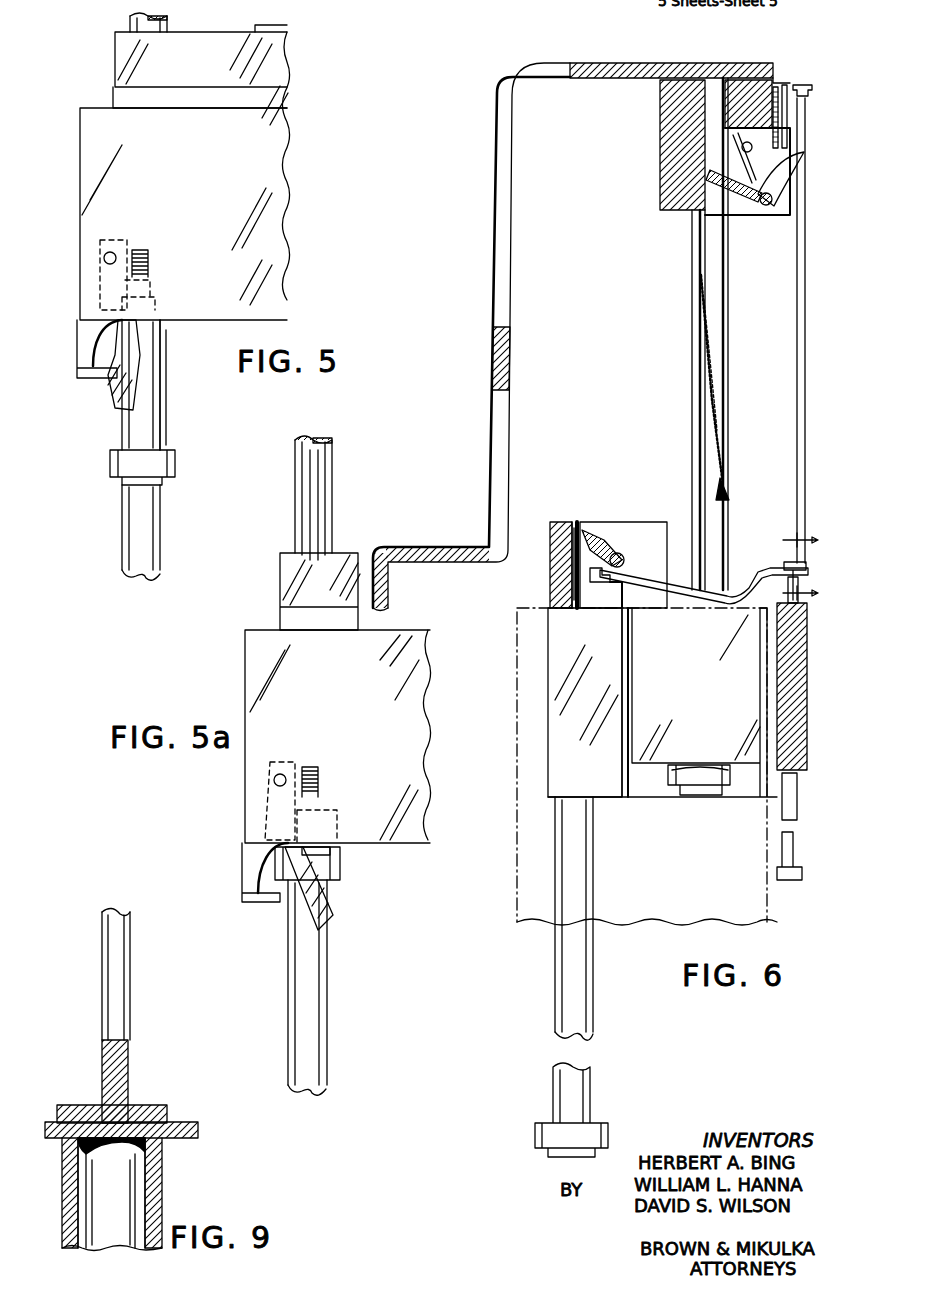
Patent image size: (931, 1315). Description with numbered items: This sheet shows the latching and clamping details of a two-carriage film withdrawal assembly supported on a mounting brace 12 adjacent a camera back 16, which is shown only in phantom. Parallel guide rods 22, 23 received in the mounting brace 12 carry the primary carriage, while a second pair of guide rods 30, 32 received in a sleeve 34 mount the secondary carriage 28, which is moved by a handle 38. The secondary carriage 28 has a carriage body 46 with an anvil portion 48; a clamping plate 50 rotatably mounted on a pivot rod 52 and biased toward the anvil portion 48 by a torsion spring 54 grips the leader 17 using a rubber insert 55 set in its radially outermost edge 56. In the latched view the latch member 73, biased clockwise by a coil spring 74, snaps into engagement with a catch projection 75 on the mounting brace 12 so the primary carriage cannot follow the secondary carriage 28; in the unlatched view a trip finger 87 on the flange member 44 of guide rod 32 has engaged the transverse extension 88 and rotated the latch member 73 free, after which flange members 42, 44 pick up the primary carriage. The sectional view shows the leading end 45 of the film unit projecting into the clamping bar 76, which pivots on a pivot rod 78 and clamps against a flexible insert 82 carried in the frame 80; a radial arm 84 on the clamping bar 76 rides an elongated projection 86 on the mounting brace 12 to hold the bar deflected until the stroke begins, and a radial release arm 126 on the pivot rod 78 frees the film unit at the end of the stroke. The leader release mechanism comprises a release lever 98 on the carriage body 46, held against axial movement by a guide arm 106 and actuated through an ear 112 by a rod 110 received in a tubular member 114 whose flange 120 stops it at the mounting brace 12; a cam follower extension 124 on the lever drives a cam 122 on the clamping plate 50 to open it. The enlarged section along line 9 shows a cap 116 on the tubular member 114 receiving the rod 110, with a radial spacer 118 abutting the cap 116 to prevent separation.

In FIG. 6, the section line 9- 9 is at (812, 566).
In FIG. 5, the mounting brace 12 is at (184, 203).
In FIG. 5A, the mounting brace 12 is at (338, 736).
In FIG. 6, the mounting brace 12 is at (796, 684).
In FIG. 6, the camera back 16 is at (540, 816).
In FIG. 6, the leader 17 is at (714, 405).
In FIG. 6, the guide rod 22 is at (575, 972).
In FIG. 5, the guide rod 23 is at (140, 512).
In FIG. 5A, the guide rod 23 is at (306, 998).
In FIG. 6, the secondary carriage 28 is at (650, 190).
In FIG. 6, the guide rod 30 is at (711, 376).
In FIG. 5, the guide rod 32 is at (134, 436).
In FIG. 5A, the guide rod 32 is at (310, 474).
In FIG. 6, the sleeve 34 is at (693, 695).
In FIG. 5, the handle 38 is at (265, 30).
In FIG. 6, the handle 38 is at (486, 408).
In FIG. 6, the flange member 42 is at (700, 770).
In FIG. 5, the flange member 44 is at (158, 466).
In FIG. 5A, the flange member 44 is at (330, 878).
In FIG. 6, the leading end 45 is at (580, 522).
In FIG. 6, the carriage body 46 is at (750, 82).
In FIG. 6, the anvil portion 48 is at (700, 182).
In FIG. 6, the clamping plate 50 is at (724, 212).
In FIG. 6, the pivot rod 52 is at (742, 207).
In FIG. 6, the torsion spring 54 is at (680, 112).
In FIG. 6, the rubber insert 55 is at (705, 172).
In FIG. 6, the radially outermost edge 56 is at (742, 150).
In FIG. 5, the latch member 73 is at (118, 366).
In FIG. 5A, the latch member 73 is at (313, 890).
In FIG. 5, the coil spring 74 is at (136, 250).
In FIG. 5A, the coil spring 74 is at (304, 768).
In FIG. 5, the catch projection 75 is at (87, 374).
In FIG. 5A, the catch projection 75 is at (257, 902).
In FIG. 6, the clamping bar 76 is at (610, 536).
In FIG. 6, the pivot rod 78 is at (630, 540).
In FIG. 5, the frame 80 is at (248, 74).
In FIG. 5A, the frame 80 is at (324, 570).
In FIG. 6, the frame 80 is at (560, 545).
In FIG. 6, the flexible insert 82 is at (566, 562).
In FIG. 6, the radial arm 84 is at (600, 590).
In FIG. 6, the elongated projection 86 is at (630, 590).
In FIG. 5, the trip finger 87 is at (160, 430).
In FIG. 5A, the trip finger 87 is at (318, 856).
In FIG. 5, the transverse extension 88 is at (145, 287).
In FIG. 5A, the transverse extension 88 is at (311, 798).
In FIG. 6, the release lever 98 is at (779, 85).
In FIG. 6, the guide arm 106 is at (779, 115).
In FIG. 6, the rod 110 is at (803, 232).
In FIG. 6, the ear 112 is at (812, 90).
In FIG. 6, the tubular member 114 is at (810, 602).
In FIG. 9, the cap 116 is at (128, 1103).
In FIG. 9, the radial spacer 118 is at (130, 1131).
In FIG. 6, the flange 120 is at (788, 878).
In FIG. 6, the cam 122 is at (790, 170).
In FIG. 6, the cam follower extension 124 is at (788, 131).
In FIG. 9, the radial release arm 126 is at (163, 1127).
In FIG. 6, the radial release arm 126 is at (732, 595).